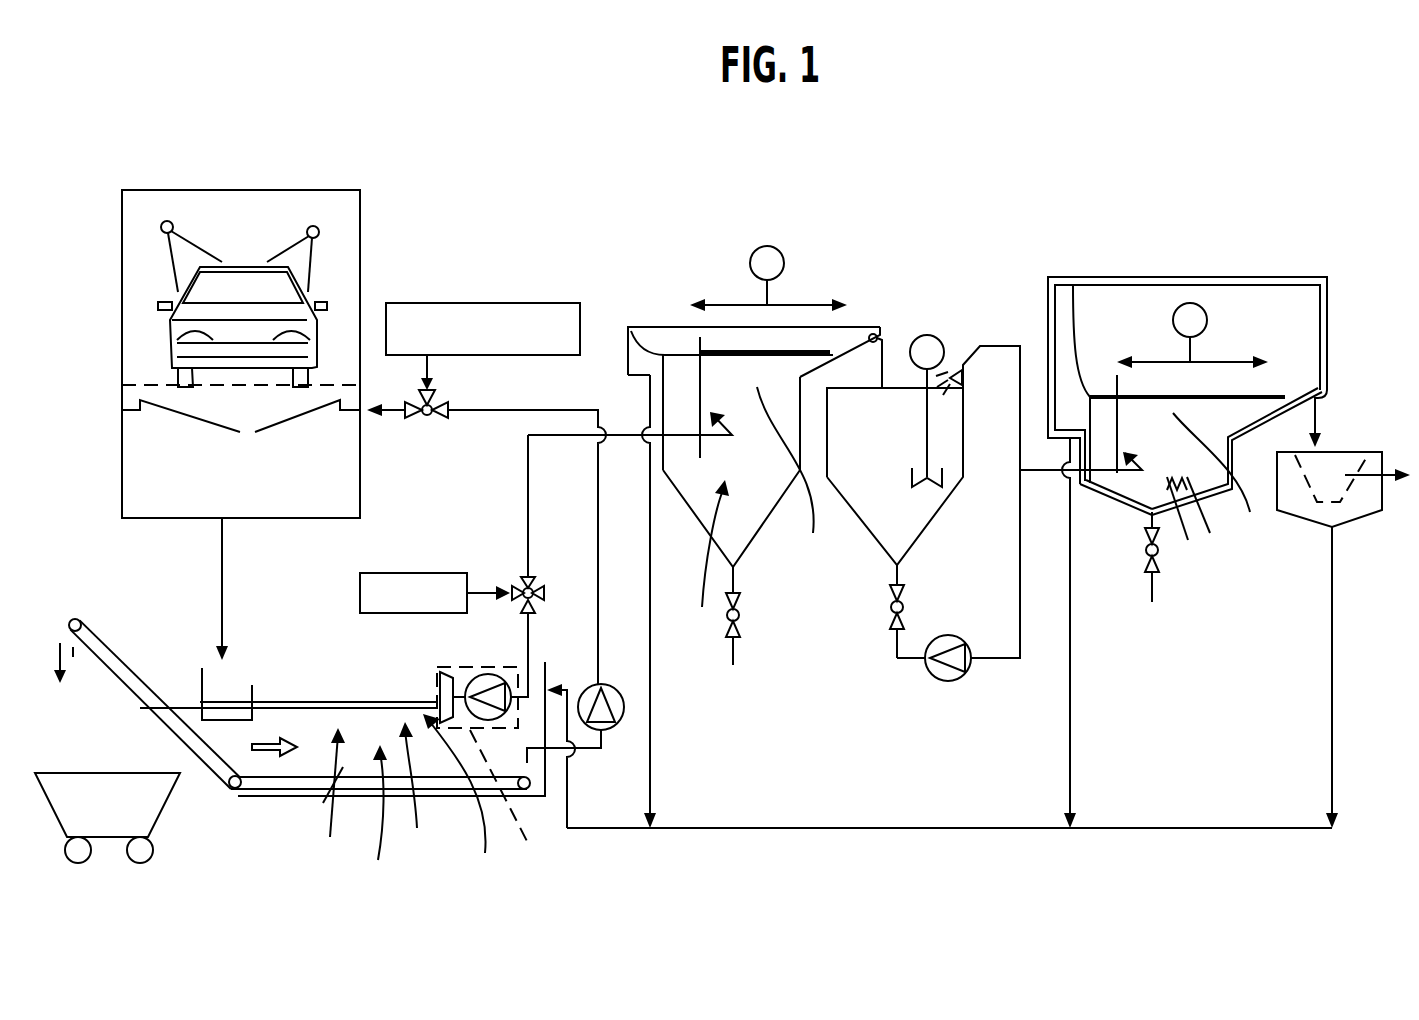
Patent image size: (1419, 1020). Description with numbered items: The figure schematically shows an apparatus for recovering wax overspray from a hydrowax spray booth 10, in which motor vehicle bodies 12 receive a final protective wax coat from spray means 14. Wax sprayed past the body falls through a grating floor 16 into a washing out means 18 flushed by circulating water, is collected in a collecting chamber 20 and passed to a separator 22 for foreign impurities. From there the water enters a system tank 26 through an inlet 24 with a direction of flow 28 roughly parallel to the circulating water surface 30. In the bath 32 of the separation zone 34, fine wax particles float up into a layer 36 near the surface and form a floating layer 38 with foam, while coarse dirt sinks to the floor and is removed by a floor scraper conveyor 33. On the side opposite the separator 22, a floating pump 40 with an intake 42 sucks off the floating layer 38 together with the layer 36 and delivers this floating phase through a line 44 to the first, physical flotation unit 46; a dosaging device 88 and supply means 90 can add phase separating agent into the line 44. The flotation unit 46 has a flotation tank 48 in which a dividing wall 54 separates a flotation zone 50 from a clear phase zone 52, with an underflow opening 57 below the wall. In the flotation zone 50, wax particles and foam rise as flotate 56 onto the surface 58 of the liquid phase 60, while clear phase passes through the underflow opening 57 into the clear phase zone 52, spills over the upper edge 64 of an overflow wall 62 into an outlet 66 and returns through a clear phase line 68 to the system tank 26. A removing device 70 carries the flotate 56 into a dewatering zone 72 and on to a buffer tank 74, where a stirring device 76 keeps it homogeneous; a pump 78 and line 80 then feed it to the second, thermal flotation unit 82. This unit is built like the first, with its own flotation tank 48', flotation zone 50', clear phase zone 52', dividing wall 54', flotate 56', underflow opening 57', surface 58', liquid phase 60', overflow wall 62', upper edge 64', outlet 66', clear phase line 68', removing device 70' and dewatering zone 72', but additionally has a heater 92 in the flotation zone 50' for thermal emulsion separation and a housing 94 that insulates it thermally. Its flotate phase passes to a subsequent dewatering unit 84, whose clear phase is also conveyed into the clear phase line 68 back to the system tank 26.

The hydrowax spray booth 10 is at (270, 183).
The motor vehicle bodies 12 is at (253, 265).
The spray means 14 is at (168, 222).
The grating floor 16 is at (155, 383).
The washing out means 18 is at (182, 408).
The collecting chamber 20 is at (160, 465).
The separator for foreign impurities 22 is at (196, 658).
The inlet 24 is at (252, 708).
The system tank 26 is at (332, 796).
The direction of flow 28 is at (268, 752).
The circulating water surface 30 is at (317, 698).
The bath 32 is at (383, 818).
The floor scraper conveyor 33 is at (240, 795).
The separation zone 34 is at (424, 792).
The layer near the surface 36 is at (465, 802).
The floating layer 38 is at (382, 702).
The floating pump 40 is at (514, 799).
The intake 42 is at (447, 693).
The line 44 is at (527, 540).
The first or physical flotation unit 46 is at (702, 559).
The flotation tank 48 is at (726, 567).
The flotation zone 50 is at (787, 269).
The clear phase zone 52 is at (732, 285).
The dividing wall 54 is at (700, 313).
The flotate 56 is at (835, 338).
The underflow opening 57 is at (669, 447).
The surface 58 is at (793, 276).
The liquid phase 60 is at (796, 478).
The overflow wall 62 is at (706, 290).
The upper edge 64 is at (623, 263).
The outlet 66 is at (612, 383).
The clear phase line 68 is at (671, 601).
The removing device 70 is at (768, 257).
The dewatering zone 72 is at (918, 297).
The buffer tank 74 is at (928, 508).
The stirring device 76 is at (925, 435).
The pump 78 is at (950, 683).
The line 80 is at (1020, 680).
The second or thermal flotation unit 82 is at (1214, 270).
The subsequent dewatering unit 84 is at (1352, 512).
The dosaging device 88 is at (532, 578).
The supply means 90 is at (395, 573).
The heater 92 is at (1193, 528).
The housing 94 is at (1097, 403).
The flotation tank 48' is at (1115, 539).
The flotation zone 50' is at (1288, 317).
The clear phase zone 52' is at (1162, 302).
The dividing wall 54' is at (1143, 342).
The flotate 56' is at (1237, 345).
The underflow opening 57' is at (1114, 513).
The surface 58' is at (1250, 361).
The liquid phase 60' is at (1223, 480).
The overflow wall 62' is at (1028, 425).
The upper edge 64' is at (1040, 286).
The outlet 66' is at (1024, 439).
The clear phase line 68' is at (1102, 633).
The removing device 70' is at (1192, 271).
The dewatering zone 72' is at (1362, 368).